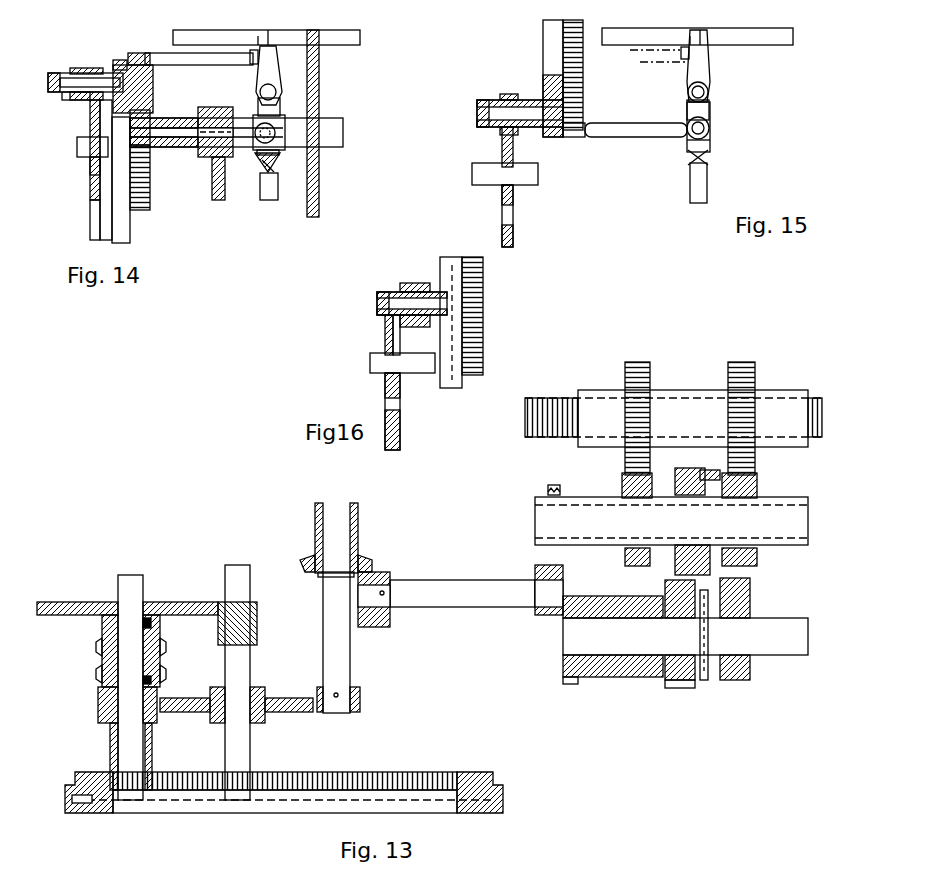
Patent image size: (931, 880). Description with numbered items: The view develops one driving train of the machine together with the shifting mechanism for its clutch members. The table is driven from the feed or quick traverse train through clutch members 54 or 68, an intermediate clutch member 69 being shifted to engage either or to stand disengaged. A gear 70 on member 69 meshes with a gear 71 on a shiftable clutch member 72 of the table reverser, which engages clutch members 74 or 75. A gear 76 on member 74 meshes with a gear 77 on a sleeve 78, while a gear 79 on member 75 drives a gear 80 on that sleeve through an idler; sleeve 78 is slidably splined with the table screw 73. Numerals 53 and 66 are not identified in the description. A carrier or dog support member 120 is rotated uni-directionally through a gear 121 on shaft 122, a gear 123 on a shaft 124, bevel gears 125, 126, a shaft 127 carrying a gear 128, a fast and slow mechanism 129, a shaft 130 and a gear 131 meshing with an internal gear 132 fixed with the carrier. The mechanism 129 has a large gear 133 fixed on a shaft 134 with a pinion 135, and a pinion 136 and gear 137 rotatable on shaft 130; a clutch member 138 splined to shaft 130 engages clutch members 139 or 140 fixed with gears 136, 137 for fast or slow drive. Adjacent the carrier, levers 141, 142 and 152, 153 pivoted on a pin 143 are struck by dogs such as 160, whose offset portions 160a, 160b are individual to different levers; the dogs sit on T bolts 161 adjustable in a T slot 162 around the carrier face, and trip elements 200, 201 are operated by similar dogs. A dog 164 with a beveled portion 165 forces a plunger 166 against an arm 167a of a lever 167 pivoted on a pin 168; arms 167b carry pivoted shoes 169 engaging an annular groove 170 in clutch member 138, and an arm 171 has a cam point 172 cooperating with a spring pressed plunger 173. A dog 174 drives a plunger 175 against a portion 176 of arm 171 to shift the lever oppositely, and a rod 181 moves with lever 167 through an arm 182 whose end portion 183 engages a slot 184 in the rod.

In FIG. 13, the gear 53 is at (750, 680).
In FIG. 13, the clutch member 54 is at (705, 682).
In FIG. 13, the collar 66 is at (568, 684).
In FIG. 13, the clutch member 68 is at (645, 680).
In FIG. 13, the intermediate clutch member 69 is at (668, 680).
In FIG. 13, the gear 70 is at (680, 690).
In FIG. 13, the gear 71 is at (708, 465).
In FIG. 13, the shiftable intermediate clutch member 72 is at (690, 545).
In FIG. 13, the table screw 73 is at (528, 425).
In FIG. 13, the clutch member 74 is at (625, 560).
In FIG. 13, the clutch member 75 is at (757, 560).
In FIG. 13, the gear 76 is at (622, 485).
In FIG. 13, the gear 77 is at (640, 362).
In FIG. 13, the sleeve 78 is at (598, 392).
In FIG. 13, the gear 79 is at (757, 485).
In FIG. 13, the gear 80 is at (742, 362).
In FIG. 14, the carrier 120 is at (128, 215).
In FIG. 15, the carrier 120 is at (543, 35).
In FIG. 16, the carrier 120 is at (450, 257).
In FIG. 13, the carrier 120 is at (503, 803).
In FIG. 13, the gear 121 is at (560, 485).
In FIG. 13, the shaft 122 is at (535, 513).
In FIG. 13, the gear 123 is at (548, 615).
In FIG. 13, the shaft 124 is at (515, 607).
In FIG. 13, the bevel gear 125 is at (375, 627).
In FIG. 13, the bevel gear 126 is at (310, 562).
In FIG. 13, the shaft 127 is at (350, 670).
In FIG. 13, the gear 128 is at (360, 705).
In FIG. 13, the fast and slow mechanism 129 is at (162, 655).
In FIG. 13, the shaft 130 is at (135, 575).
In FIG. 13, the gear 131 is at (110, 745).
In FIG. 13, the internal gear 132 is at (452, 772).
In FIG. 13, the large gear 133 is at (290, 712).
In FIG. 13, the shaft 134 is at (250, 672).
In FIG. 13, the pinion 135 is at (257, 607).
In FIG. 13, the pinion 136 is at (98, 705).
In FIG. 13, the gear 137 is at (45, 602).
In FIG. 14, the clutch member 138 is at (258, 160).
In FIG. 13, the clutch member 138 is at (96, 645).
In FIG. 13, the clutch member 139 is at (152, 682).
In FIG. 13, the clutch member 140 is at (152, 622).
In FIG. 14, the lever 141 is at (90, 170).
In FIG. 14, the lever 142 is at (90, 115).
In FIG. 14, the pin 143 is at (77, 147).
In FIG. 15, the pin 143 is at (472, 175).
In FIG. 16, the pin 143 is at (370, 363).
In FIG. 15, the lever 152 is at (502, 200).
In FIG. 15, the lever 153 is at (502, 140).
In FIG. 14, the dog 160 is at (66, 93).
In FIG. 15, the dog 160 is at (507, 94).
In FIG. 16, the dog 160 is at (405, 283).
In FIG. 14, the extended portion 160a is at (90, 68).
In FIG. 14, the extended portion 160b is at (110, 125).
In FIG. 14, the T bolt 161 is at (50, 73).
In FIG. 15, the T bolt 161 is at (477, 108).
In FIG. 16, the T bolt 161 is at (377, 302).
In FIG. 14, the T slot 162 is at (150, 70).
In FIG. 13, the T slot 162 is at (85, 813).
In FIG. 14, the dog 164 is at (118, 60).
In FIG. 14, the extended portion 165 is at (140, 53).
In FIG. 14, the plunger 166 is at (193, 62).
In FIG. 14, the lever 167 is at (262, 90).
In FIG. 15, the lever 167 is at (688, 90).
In FIG. 14, the arm 167a is at (262, 55).
In FIG. 15, the arm 167a is at (683, 60).
In FIG. 14, the arms 167b is at (278, 125).
In FIG. 15, the arms 167b is at (710, 125).
In FIG. 14, the pin 168 is at (276, 92).
In FIG. 15, the pin 168 is at (709, 90).
In FIG. 14, the pivoted shoe 169 is at (248, 150).
In FIG. 14, the annular groove 170 is at (272, 160).
In FIG. 14, the arm 171 is at (319, 157).
In FIG. 15, the arm 171 is at (712, 148).
In FIG. 14, the cam point 172 is at (268, 180).
In FIG. 15, the cam point 172 is at (708, 160).
In FIG. 14, the spring pressed plunger 173 is at (276, 195).
In FIG. 15, the spring pressed plunger 173 is at (690, 180).
In FIG. 15, the carrier dog 174 is at (578, 137).
In FIG. 15, the plunger 175 is at (628, 137).
In FIG. 15, the portion 176 is at (688, 138).
In FIG. 14, the rod 181 is at (348, 45).
In FIG. 15, the rod 181 is at (625, 45).
In FIG. 14, the arm 182 is at (278, 60).
In FIG. 15, the arm 182 is at (708, 50).
In FIG. 14, the end portion 183 is at (270, 45).
In FIG. 15, the end portion 183 is at (706, 40).
In FIG. 14, the slot 184 is at (258, 44).
In FIG. 15, the slot 184 is at (690, 40).
In FIG. 16, the trip element 200 is at (385, 385).
In FIG. 16, the trip element 201 is at (385, 333).